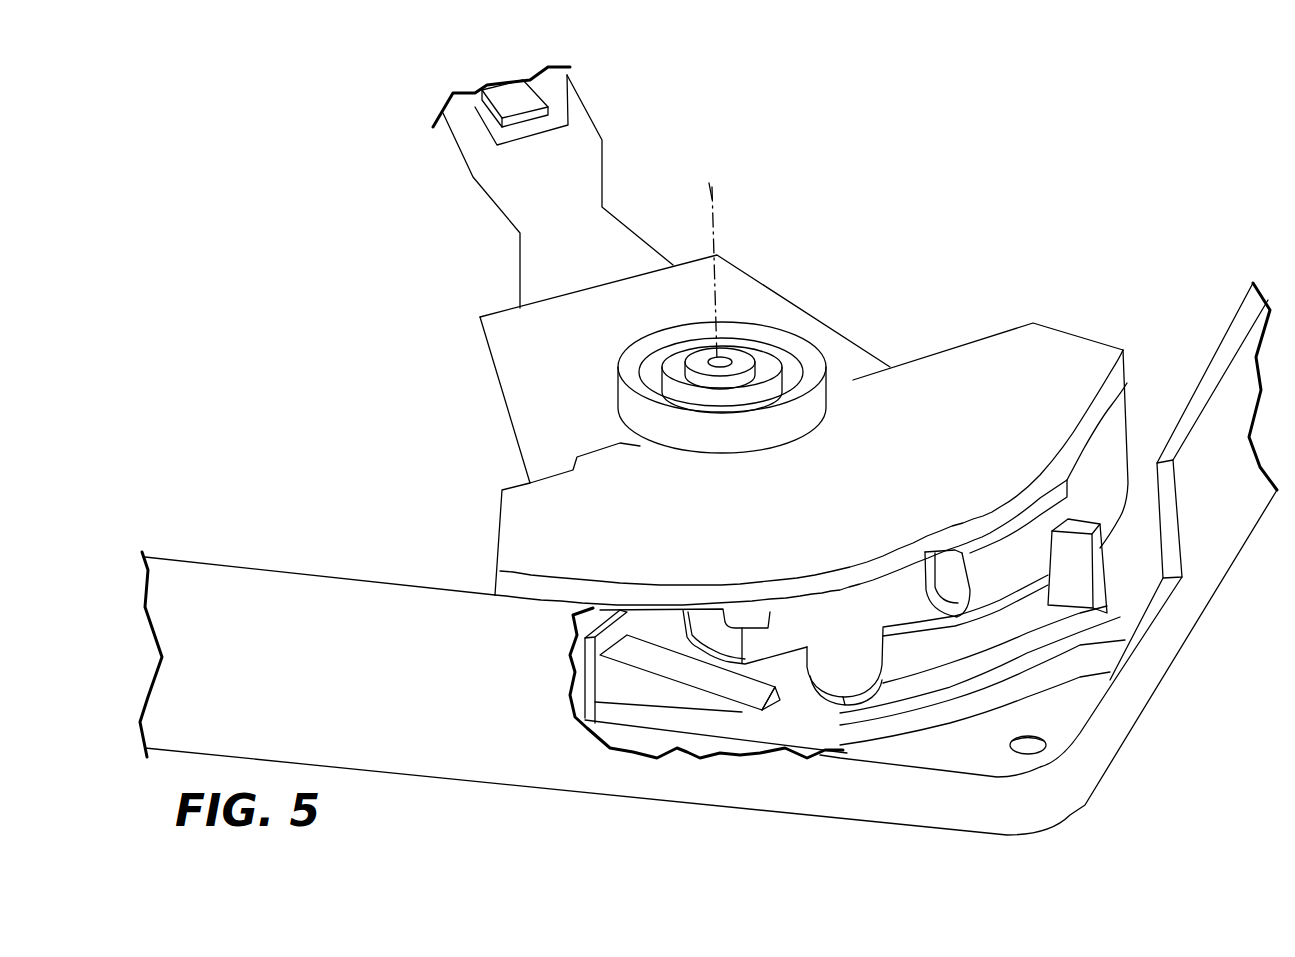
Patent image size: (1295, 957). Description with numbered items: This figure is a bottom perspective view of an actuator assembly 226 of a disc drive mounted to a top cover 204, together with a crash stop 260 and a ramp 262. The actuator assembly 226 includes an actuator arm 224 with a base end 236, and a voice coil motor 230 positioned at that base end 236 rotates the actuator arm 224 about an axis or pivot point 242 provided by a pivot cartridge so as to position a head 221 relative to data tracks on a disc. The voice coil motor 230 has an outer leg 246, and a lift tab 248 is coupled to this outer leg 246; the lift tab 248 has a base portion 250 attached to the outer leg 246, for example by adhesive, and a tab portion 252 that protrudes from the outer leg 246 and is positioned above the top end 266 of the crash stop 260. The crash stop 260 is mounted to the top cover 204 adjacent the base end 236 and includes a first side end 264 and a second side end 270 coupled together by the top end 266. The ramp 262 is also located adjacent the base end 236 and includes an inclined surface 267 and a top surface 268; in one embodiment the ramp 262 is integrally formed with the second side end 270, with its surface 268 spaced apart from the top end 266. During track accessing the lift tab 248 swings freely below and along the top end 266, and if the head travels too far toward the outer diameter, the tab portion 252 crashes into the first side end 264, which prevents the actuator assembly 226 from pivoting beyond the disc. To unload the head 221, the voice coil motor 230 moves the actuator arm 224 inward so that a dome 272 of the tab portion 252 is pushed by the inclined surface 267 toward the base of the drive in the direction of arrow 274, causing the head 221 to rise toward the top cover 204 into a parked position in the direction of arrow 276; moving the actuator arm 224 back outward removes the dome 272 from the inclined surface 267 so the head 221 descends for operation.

The top cover 204 is at (443, 737).
The head 221 is at (523, 103).
The actuator arm 224 is at (523, 360).
The actuator assembly 226 is at (878, 218).
The voice coil motor 230 is at (703, 620).
The base end 236 is at (1000, 540).
The axis or pivot point 242 is at (712, 193).
The outer leg 246 is at (933, 577).
The lift tab 248 is at (974, 580).
The base portion 250 is at (782, 640).
The tab portion 252 is at (867, 669).
The crash stop 260 is at (1073, 640).
The ramp 262 is at (673, 695).
The first side end 264 is at (1078, 563).
The top end 266 is at (1007, 650).
The inclined surface 267 is at (773, 710).
The top surface 268 is at (738, 683).
The second side end 270 is at (573, 622).
The dome 272 is at (850, 707).
The arrow 274 is at (842, 642).
The arrow 276 is at (523, 127).